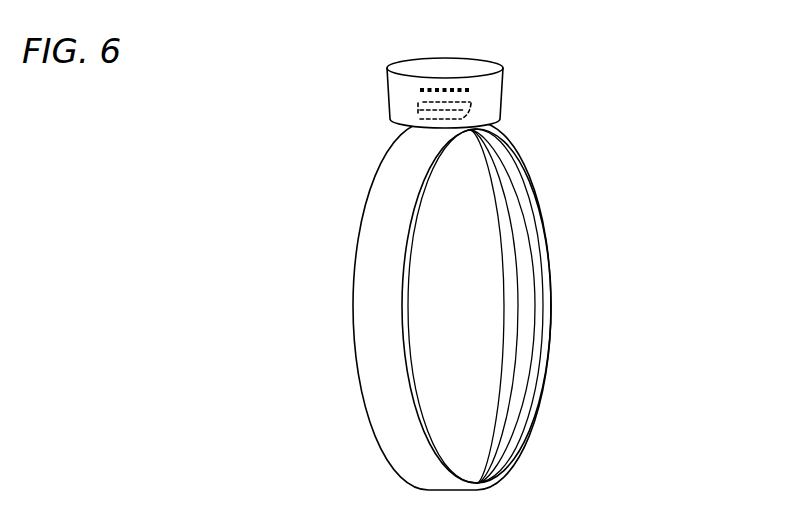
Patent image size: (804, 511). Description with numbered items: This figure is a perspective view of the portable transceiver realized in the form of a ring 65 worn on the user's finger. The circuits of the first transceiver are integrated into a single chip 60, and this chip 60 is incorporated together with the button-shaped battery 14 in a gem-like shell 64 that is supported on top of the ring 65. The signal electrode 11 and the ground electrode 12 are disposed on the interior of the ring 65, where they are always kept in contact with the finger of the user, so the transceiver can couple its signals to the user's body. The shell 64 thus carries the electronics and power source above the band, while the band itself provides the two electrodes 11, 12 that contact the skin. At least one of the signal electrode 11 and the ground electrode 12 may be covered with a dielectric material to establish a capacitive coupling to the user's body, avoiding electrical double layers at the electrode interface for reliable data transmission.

The signal electrode 11 is at (538, 265).
The ground electrode 12 is at (508, 372).
The button-shaped battery 14 is at (428, 86).
The chip 60 is at (416, 112).
The gem-like shell 64 is at (498, 67).
The ring 65 is at (352, 313).